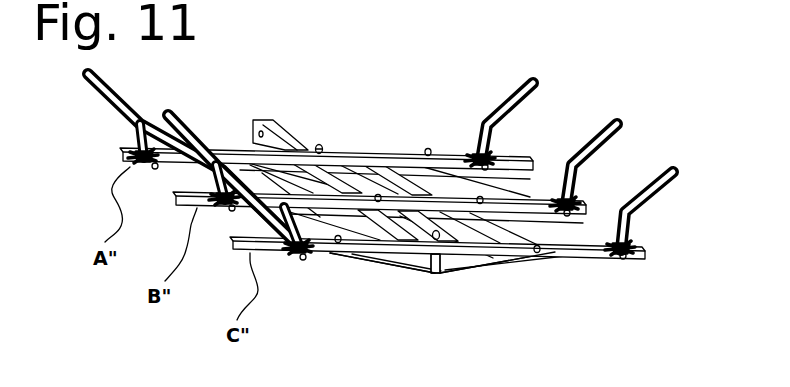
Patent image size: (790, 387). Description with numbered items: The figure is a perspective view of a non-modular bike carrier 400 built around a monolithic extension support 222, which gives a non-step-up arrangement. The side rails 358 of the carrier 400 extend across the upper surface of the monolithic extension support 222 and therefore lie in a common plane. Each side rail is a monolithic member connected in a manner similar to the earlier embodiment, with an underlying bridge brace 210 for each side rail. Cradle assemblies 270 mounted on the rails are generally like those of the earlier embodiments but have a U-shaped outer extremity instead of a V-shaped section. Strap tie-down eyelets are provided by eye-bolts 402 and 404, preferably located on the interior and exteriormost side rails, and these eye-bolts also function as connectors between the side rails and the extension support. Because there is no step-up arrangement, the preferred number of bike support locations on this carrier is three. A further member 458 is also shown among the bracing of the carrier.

The bike carrier 400 is at (403, 74).
The bridge brace 210 is at (387, 262).
The monolithic extension support 222 is at (285, 131).
The eye-bolt 402 is at (320, 144).
The eye-bolt 404 is at (440, 232).
The side rails 358 is at (446, 150).
The cradle assemblies 270 is at (667, 190).
The cross brace member 458 is at (588, 262).